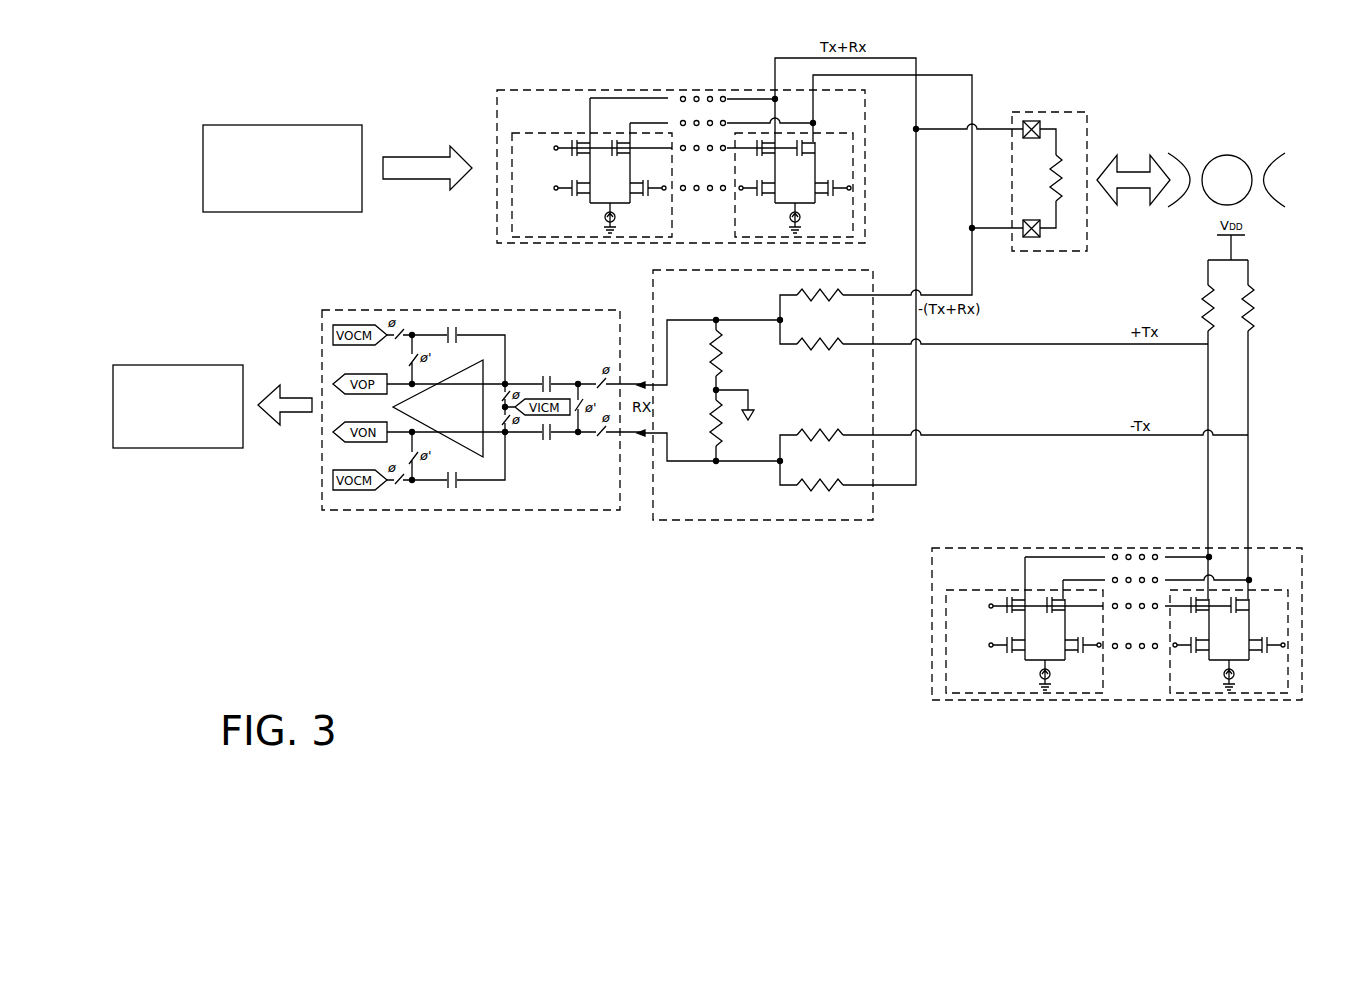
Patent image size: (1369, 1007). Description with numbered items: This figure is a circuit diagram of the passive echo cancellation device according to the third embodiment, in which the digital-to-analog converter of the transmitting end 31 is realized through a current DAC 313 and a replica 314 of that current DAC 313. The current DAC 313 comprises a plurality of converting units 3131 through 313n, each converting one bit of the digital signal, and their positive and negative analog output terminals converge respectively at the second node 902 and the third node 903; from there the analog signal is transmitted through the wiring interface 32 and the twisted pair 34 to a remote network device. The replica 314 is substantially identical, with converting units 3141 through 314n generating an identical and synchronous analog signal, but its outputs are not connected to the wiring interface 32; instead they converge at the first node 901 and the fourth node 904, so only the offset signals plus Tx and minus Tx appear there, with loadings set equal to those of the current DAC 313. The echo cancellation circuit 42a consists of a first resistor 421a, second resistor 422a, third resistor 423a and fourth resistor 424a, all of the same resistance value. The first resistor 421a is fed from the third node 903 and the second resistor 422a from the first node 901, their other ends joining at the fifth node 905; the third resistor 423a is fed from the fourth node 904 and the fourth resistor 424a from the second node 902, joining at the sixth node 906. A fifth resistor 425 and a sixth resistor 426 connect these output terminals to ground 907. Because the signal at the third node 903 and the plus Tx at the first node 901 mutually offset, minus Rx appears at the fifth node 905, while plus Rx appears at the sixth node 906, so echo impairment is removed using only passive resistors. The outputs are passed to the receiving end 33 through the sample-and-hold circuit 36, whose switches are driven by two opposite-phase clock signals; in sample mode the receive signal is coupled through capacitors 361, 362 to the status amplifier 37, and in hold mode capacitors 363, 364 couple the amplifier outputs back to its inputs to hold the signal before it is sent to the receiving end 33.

The transmitting end 31 is at (304, 125).
The receiving end 33 is at (180, 449).
The current DAC 313 is at (485, 203).
The converting unit 3131 is at (683, 198).
The converting unit 313n is at (832, 127).
The replica 314 is at (930, 660).
The converting unit 3141 is at (1110, 668).
The converting unit 314n is at (1268, 586).
The wiring interface 32 is at (1040, 253).
The twisted pair 34 is at (1225, 153).
The sample-and-hold circuit 36 is at (580, 512).
The status amplifier 37 is at (442, 380).
The capacitor 361 is at (543, 375).
The capacitor 362 is at (543, 447).
The capacitor 363 is at (458, 326).
The capacitor 364 is at (460, 488).
The echo cancellation circuit 42a is at (838, 522).
The first resistor 421a is at (826, 312).
The second resistor 422a is at (826, 360).
The third resistor 423a is at (826, 452).
The fourth resistor 424a is at (826, 500).
The fifth resistor 425 is at (710, 357).
The sixth resistor 426 is at (710, 423).
The first node 901 is at (1208, 555).
The second node 902 is at (918, 131).
The third node 903 is at (974, 230).
The fourth node 904 is at (1250, 578).
The fifth node 905 is at (779, 320).
The sixth node 906 is at (780, 460).
The ground 907 is at (758, 405).